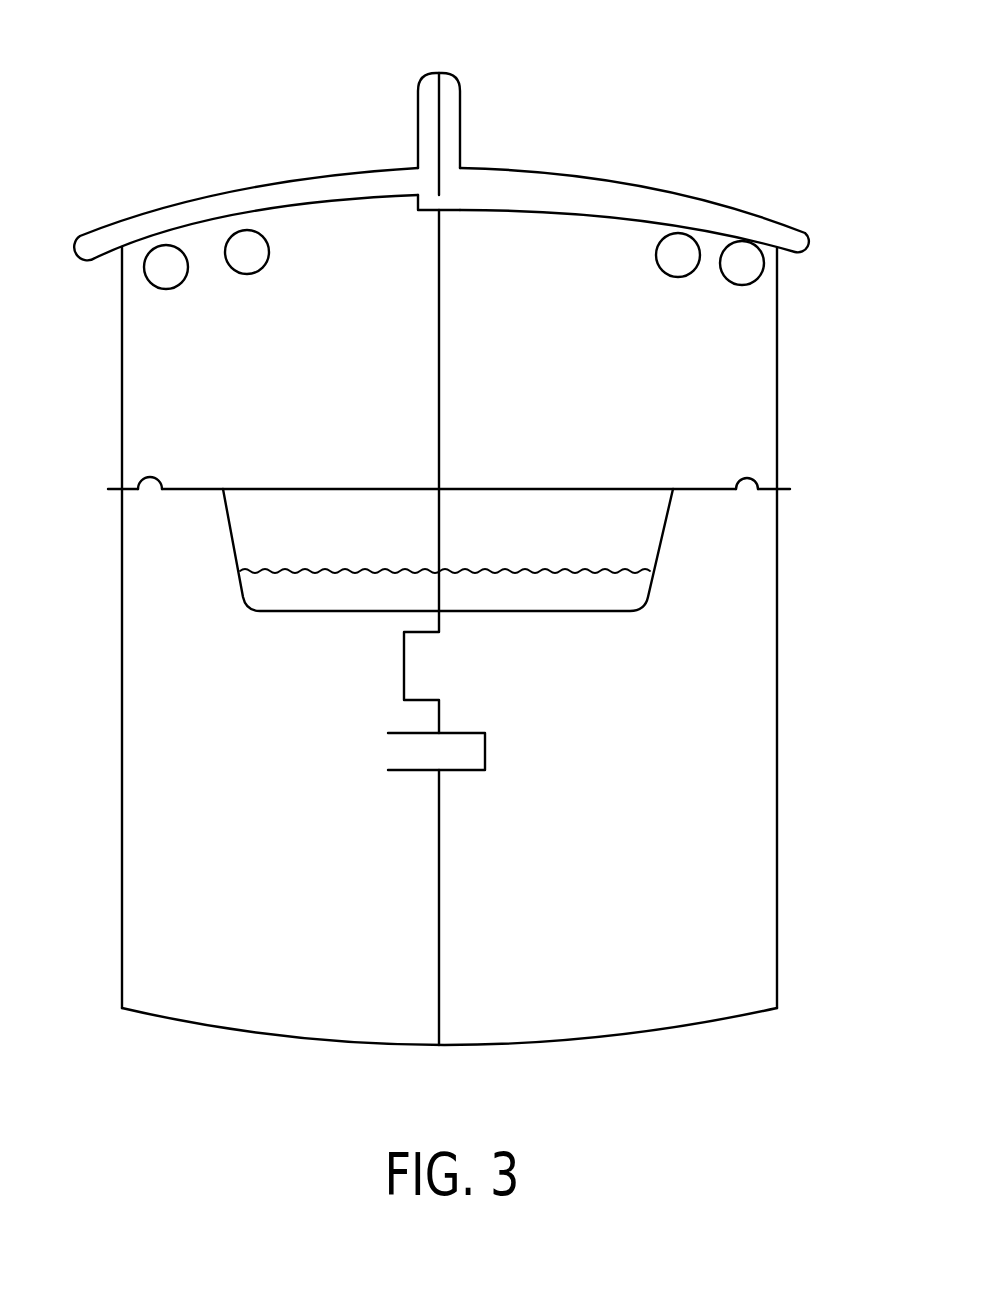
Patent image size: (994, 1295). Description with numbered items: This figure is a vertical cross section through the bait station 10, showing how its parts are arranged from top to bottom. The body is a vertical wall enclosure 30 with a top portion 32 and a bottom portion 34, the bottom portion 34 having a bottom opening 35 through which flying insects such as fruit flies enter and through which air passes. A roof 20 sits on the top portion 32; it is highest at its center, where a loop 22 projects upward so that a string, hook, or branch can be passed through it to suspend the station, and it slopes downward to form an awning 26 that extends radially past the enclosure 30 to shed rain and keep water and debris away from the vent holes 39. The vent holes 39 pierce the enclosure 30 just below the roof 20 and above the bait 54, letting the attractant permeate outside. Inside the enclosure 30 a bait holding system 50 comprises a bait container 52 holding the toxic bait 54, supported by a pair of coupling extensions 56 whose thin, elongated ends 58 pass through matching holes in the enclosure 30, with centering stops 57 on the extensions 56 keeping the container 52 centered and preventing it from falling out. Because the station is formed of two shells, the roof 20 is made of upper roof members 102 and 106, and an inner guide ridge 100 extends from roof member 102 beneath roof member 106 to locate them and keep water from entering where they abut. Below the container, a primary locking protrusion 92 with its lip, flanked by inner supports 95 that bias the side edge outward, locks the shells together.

The bait station 10 is at (709, 97).
The roof 20 is at (557, 170).
The loop 22 is at (444, 74).
The awning 26 is at (790, 254).
The vertical wall enclosure 30 is at (778, 760).
The top portion 32 is at (132, 263).
The bottom portion 34 is at (122, 958).
The bottom opening 35 is at (243, 1038).
The vent holes 39 is at (173, 272).
The bait holding system 50 is at (216, 547).
The bait container 52 is at (652, 589).
The bait 54 is at (588, 600).
The coupling extensions 56 is at (183, 483).
The centering stops 57 is at (152, 468).
The ends of coupling extensions 58 is at (117, 485).
The primary locking protrusion 92 is at (415, 667).
The inner supports 95 is at (413, 758).
The inner guide ridge 100 is at (420, 208).
The upper roof member 102 is at (632, 180).
The upper roof member 106 is at (270, 178).